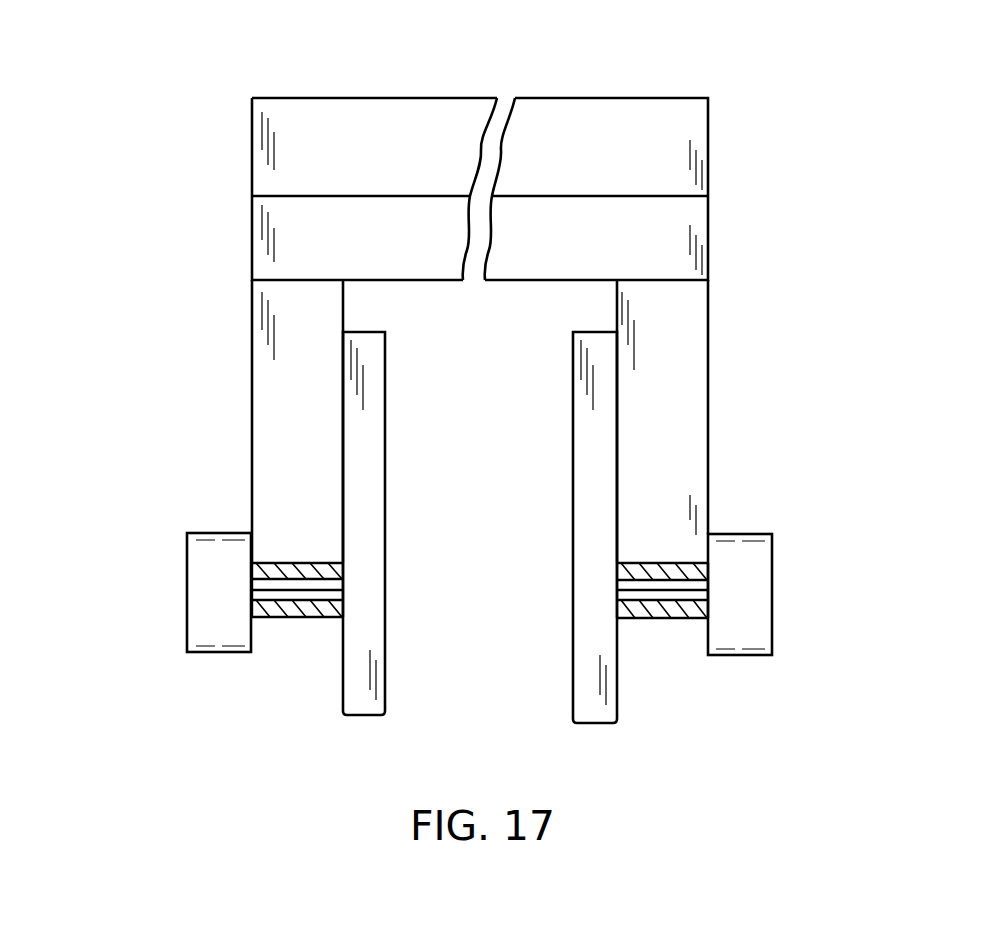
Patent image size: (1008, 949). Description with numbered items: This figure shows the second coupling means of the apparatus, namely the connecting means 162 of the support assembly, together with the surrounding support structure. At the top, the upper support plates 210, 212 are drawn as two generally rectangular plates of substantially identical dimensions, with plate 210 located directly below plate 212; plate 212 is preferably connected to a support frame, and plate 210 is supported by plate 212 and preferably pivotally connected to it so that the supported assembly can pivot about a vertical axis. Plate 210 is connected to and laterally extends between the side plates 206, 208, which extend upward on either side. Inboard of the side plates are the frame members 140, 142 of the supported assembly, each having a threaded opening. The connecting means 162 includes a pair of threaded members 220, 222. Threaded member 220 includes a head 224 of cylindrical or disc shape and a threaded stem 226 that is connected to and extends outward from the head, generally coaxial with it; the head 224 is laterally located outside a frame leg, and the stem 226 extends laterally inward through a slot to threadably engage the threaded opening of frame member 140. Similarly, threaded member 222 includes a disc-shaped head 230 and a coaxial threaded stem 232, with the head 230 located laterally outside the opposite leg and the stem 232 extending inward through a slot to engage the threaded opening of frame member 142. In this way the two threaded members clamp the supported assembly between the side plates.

The upper support plate 212 is at (576, 115).
The upper support plate 210 is at (678, 210).
The side plate 206 is at (273, 373).
The side plate 208 is at (700, 344).
The frame member 140 is at (372, 510).
The frame member 142 is at (590, 441).
The connecting means 162 is at (222, 512).
The threaded member 220 is at (184, 587).
The head 224 is at (205, 560).
The stem 226 is at (303, 600).
The threaded member 222 is at (759, 581).
The head 230 is at (757, 621).
The stem 232 is at (655, 590).